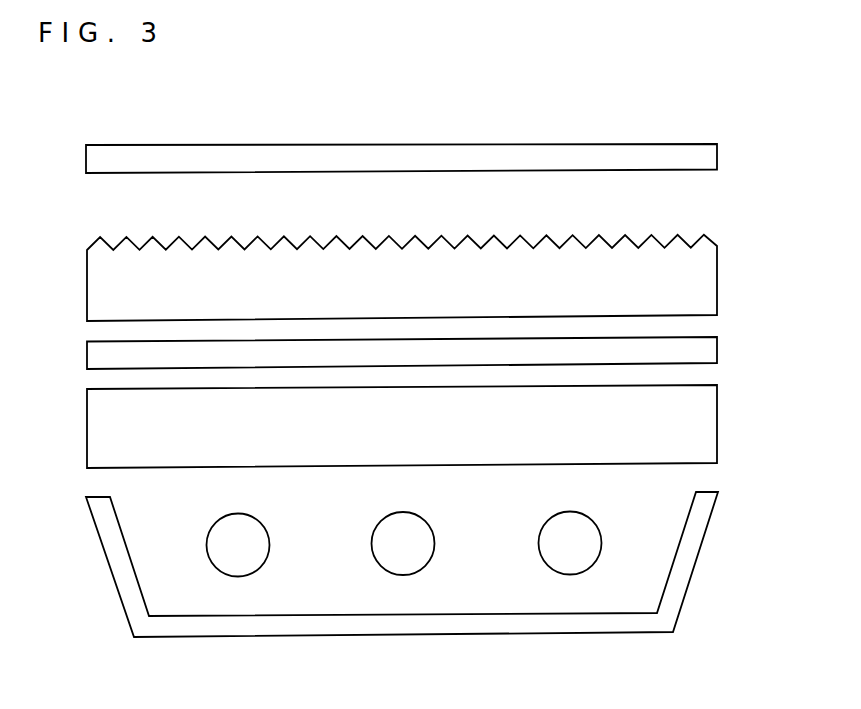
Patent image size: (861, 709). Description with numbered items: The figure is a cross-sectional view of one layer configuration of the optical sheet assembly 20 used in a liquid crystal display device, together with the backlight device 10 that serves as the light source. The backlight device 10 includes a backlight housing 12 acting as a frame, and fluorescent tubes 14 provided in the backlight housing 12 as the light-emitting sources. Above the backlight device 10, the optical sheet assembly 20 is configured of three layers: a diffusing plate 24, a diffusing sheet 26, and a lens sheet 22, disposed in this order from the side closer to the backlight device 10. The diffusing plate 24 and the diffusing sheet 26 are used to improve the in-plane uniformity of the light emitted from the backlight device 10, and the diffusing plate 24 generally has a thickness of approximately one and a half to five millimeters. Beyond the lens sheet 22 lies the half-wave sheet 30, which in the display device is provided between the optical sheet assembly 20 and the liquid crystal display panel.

The backlight device 10 is at (733, 525).
The backlight housing 12 is at (682, 577).
The fluorescent tube 14 is at (570, 562).
The optical sheet assembly 20 is at (788, 241).
The lens sheet 22 is at (705, 281).
The diffusing plate 24 is at (705, 428).
The diffusing sheet 26 is at (705, 350).
The λ/2 sheet 30 is at (703, 158).